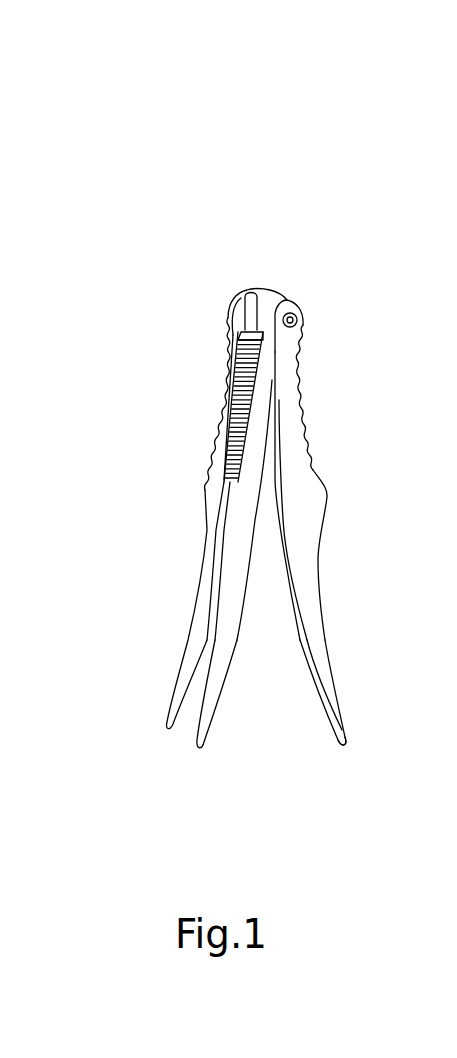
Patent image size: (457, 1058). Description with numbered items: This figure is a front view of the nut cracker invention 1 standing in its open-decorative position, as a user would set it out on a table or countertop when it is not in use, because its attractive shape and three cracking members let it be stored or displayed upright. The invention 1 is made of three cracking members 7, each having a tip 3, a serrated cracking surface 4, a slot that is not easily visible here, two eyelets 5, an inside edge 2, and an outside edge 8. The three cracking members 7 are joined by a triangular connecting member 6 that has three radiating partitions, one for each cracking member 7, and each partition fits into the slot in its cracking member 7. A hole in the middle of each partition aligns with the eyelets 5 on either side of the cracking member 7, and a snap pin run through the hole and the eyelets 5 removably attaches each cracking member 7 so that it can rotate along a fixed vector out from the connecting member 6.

The invention 1 is at (383, 190).
The inside edge 2 is at (235, 663).
The tip 3 is at (343, 733).
The serrated cracking surface 4 is at (298, 410).
The eyelet 5 is at (294, 315).
The connecting member 6 is at (255, 307).
The cracking member 7 is at (308, 528).
The outside edge 8 is at (290, 578).